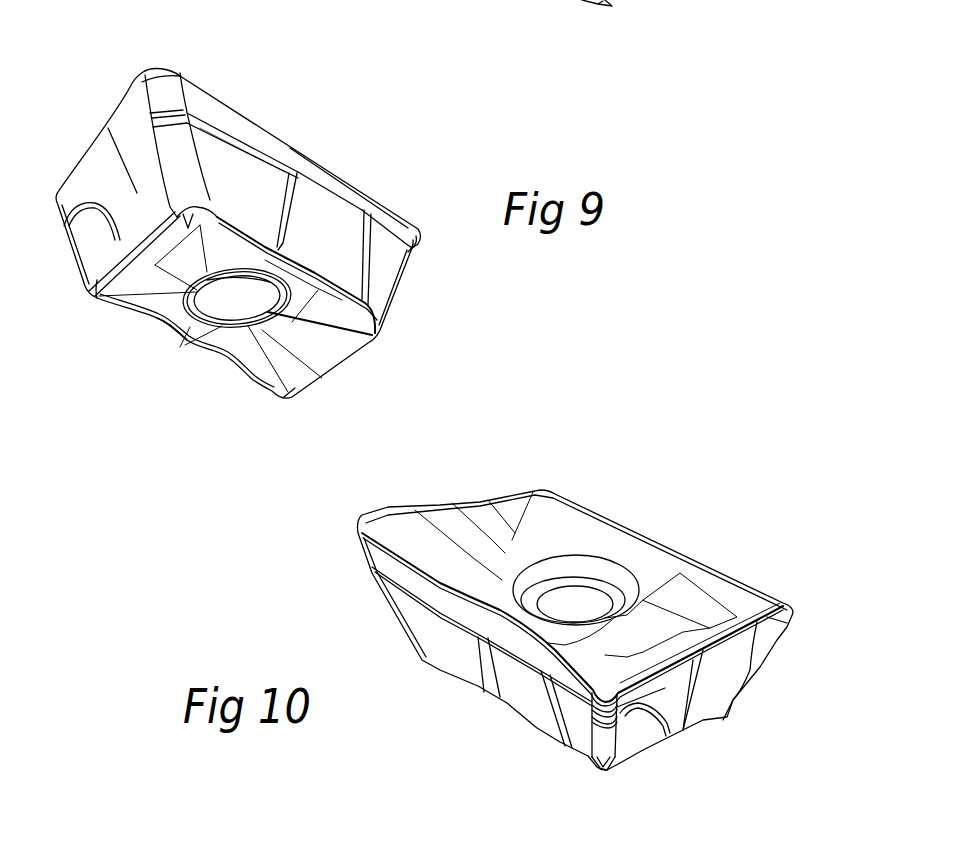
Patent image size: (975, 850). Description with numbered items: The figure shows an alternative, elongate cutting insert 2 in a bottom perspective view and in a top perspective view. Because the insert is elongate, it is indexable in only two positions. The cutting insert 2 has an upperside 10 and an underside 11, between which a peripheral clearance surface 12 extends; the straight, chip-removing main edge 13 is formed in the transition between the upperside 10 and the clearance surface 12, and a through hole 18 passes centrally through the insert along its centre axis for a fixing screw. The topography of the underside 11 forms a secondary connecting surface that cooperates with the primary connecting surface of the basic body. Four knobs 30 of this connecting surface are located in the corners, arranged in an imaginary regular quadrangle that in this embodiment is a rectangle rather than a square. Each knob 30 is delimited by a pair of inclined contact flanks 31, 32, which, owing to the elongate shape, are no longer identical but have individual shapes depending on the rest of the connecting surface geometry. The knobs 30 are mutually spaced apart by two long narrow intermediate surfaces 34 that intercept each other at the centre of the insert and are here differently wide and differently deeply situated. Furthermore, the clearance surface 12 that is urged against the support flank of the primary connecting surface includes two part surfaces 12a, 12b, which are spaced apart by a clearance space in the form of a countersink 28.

In FIG. 9, the cutting insert 2 is at (86, 103).
In FIG. 10, the cutting insert 2 is at (560, 465).
In FIG. 10, the upperside 10 is at (492, 522).
In FIG. 9, the underside 11 is at (212, 373).
In FIG. 9, the clearance surface 12 is at (272, 166).
In FIG. 9, the part surface 12a is at (255, 193).
In FIG. 10, the part surface 12a is at (468, 659).
In FIG. 9, the part surface 12b is at (385, 247).
In FIG. 10, the part surface 12b is at (575, 720).
In FIG. 10, the main edge 13 is at (407, 563).
In FIG. 9, the through hole 18 is at (237, 297).
In FIG. 10, the through hole 18 is at (610, 573).
In FIG. 9, the countersink 28 is at (335, 243).
In FIG. 9, the knob 30 is at (173, 225).
In FIG. 9, the contact flank 31 is at (350, 340).
In FIG. 9, the contact flank 32 is at (348, 314).
In FIG. 9, the intermediate surface 34 is at (323, 353).